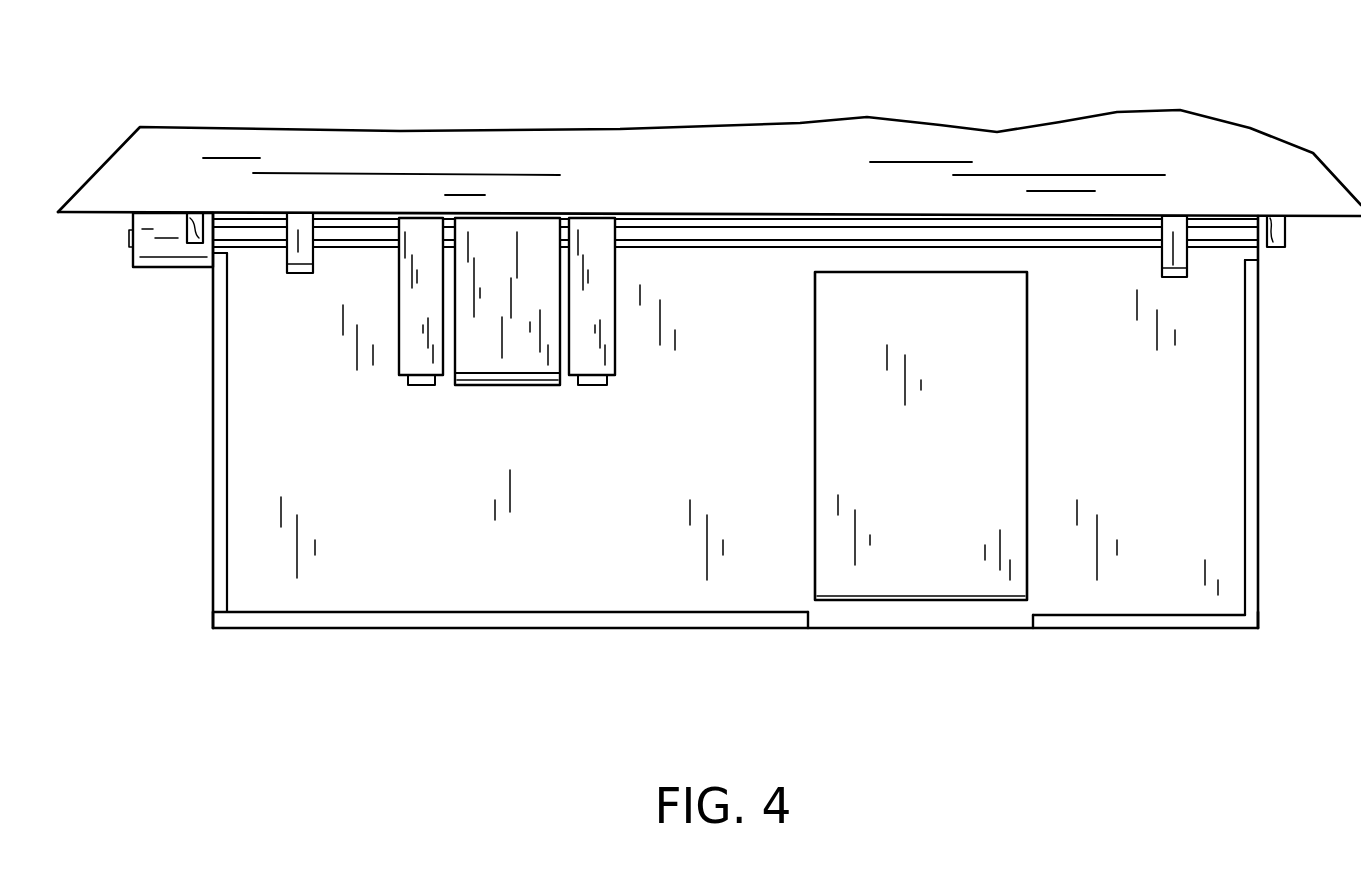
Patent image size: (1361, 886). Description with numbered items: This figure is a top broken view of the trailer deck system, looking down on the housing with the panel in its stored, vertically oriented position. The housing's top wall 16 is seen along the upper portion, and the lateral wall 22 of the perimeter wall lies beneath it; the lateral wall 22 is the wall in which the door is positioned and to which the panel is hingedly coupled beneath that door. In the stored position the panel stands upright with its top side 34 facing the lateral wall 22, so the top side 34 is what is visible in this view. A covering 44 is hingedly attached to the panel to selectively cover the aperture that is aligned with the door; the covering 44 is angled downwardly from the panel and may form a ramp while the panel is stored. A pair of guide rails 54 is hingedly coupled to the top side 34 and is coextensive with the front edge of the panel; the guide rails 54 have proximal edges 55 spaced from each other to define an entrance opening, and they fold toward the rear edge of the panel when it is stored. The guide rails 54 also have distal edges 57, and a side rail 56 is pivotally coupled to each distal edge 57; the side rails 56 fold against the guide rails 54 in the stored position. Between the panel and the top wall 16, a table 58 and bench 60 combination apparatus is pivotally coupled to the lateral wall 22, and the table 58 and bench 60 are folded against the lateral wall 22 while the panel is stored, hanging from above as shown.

The top wall 16 is at (346, 131).
The lateral wall 22 is at (82, 213).
The top side 34 is at (447, 578).
The covering 44 is at (917, 568).
The guide rails 54 is at (560, 628).
The proximal edges 55 is at (810, 628).
The side rails 56 is at (213, 476).
The distal edges 57 is at (208, 628).
The table 58 is at (505, 240).
The bench 60 is at (418, 240).